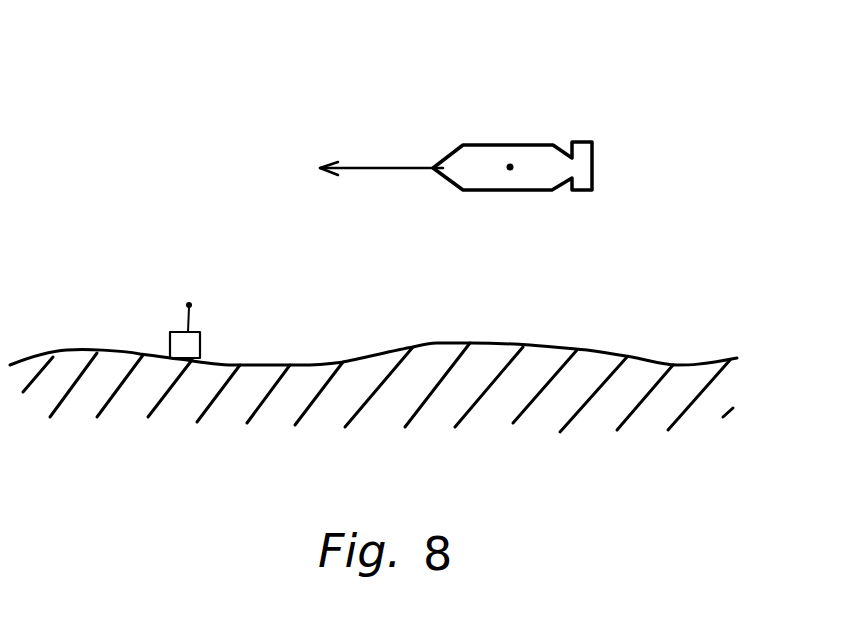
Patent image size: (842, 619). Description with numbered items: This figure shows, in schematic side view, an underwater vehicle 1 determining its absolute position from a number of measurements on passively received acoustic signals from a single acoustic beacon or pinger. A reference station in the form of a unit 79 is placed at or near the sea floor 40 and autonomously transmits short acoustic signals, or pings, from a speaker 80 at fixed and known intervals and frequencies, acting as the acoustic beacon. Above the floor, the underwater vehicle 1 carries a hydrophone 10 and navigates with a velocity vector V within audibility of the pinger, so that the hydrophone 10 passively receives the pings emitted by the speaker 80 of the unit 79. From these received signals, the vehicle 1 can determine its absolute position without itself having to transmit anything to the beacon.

The underwater vehicle 1 is at (500, 143).
The hydrophone 10 is at (522, 167).
The velocity vector V is at (377, 168).
The sea floor 40 is at (86, 350).
The unit 79 is at (207, 343).
The speaker 80 is at (200, 303).